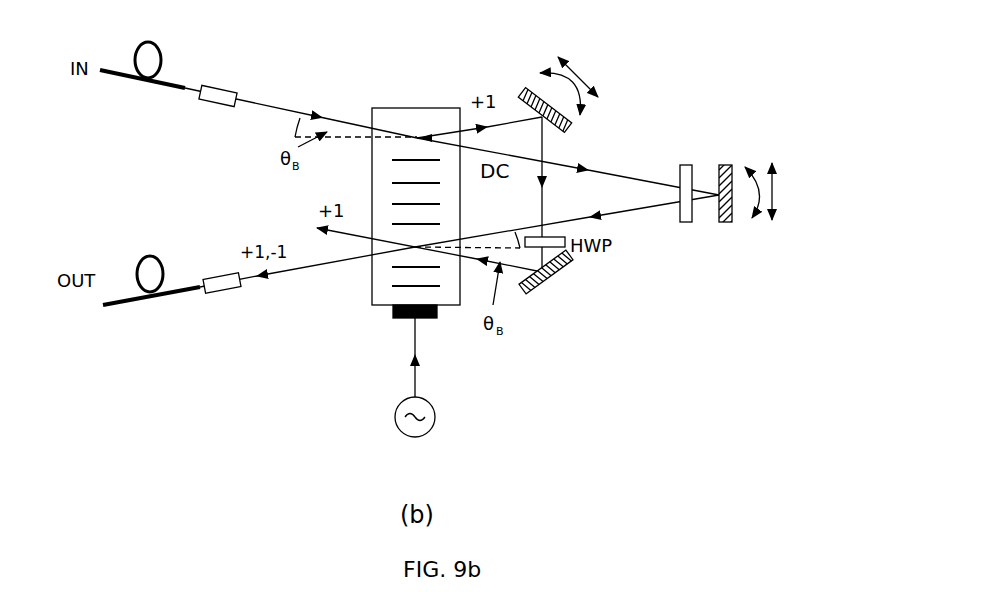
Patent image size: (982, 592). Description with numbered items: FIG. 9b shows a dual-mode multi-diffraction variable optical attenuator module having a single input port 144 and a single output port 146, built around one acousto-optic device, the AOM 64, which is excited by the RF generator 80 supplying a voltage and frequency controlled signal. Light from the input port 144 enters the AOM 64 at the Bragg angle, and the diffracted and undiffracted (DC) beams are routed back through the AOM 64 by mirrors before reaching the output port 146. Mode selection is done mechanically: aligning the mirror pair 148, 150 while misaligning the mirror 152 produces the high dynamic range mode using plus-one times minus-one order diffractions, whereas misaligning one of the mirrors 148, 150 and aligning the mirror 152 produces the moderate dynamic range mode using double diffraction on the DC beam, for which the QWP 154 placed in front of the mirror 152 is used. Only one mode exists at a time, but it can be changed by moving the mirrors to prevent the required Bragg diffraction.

The input port 144 is at (173, 87).
The output port 146 is at (177, 288).
The mirror 148 is at (568, 128).
The mirror 150 is at (530, 293).
The mirror 152 is at (730, 222).
The QWP 154 is at (690, 165).
The AOM 64 is at (450, 295).
The RF generator 80 is at (435, 413).